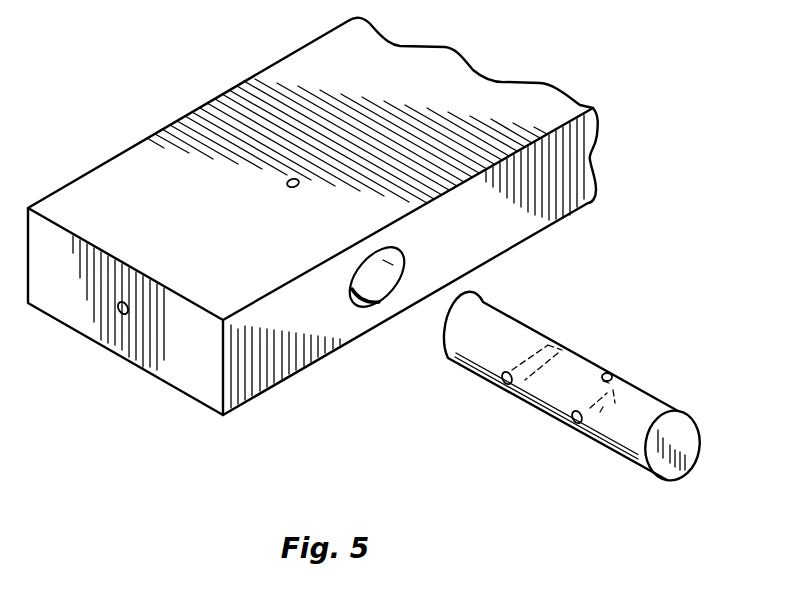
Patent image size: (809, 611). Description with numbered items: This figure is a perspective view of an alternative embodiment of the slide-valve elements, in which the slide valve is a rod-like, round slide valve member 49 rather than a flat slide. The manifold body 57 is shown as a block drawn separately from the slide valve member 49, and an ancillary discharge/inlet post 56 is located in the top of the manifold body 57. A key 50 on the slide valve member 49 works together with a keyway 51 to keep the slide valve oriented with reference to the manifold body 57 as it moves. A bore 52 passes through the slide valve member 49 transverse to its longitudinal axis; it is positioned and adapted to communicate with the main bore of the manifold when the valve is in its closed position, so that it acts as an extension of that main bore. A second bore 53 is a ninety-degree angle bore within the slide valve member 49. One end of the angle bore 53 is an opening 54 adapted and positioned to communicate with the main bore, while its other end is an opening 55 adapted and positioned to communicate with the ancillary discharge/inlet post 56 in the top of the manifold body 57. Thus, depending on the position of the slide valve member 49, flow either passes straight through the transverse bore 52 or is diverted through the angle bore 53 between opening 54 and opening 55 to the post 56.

The slide valve member 49 is at (667, 402).
The key 50 is at (668, 481).
The keyway 51 is at (377, 307).
The bore 52 is at (503, 382).
The angle bore 53 is at (602, 412).
The opening 54 is at (571, 424).
The opening 55 is at (612, 371).
The ancillary discharge/inlet post 56 is at (287, 184).
The manifold body 57 is at (205, 360).